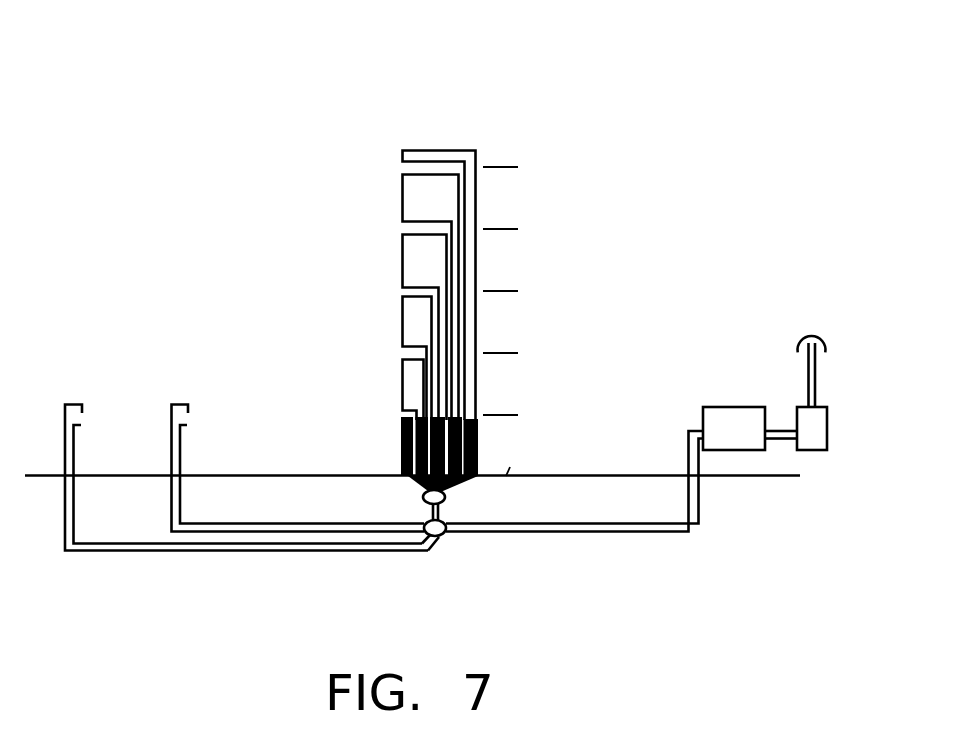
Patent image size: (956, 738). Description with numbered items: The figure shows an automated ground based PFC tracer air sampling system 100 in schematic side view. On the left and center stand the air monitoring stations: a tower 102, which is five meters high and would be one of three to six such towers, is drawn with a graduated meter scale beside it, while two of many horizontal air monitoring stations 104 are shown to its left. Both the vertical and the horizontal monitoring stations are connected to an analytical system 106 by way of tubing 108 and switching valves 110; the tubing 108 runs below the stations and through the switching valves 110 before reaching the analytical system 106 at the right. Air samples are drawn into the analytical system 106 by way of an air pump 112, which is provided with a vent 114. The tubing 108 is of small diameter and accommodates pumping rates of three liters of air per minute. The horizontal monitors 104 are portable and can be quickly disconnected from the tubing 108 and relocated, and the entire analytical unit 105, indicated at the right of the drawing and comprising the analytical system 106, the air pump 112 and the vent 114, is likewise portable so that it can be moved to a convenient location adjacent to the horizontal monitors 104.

The automated ground based PFC tracer air sampling system 100 is at (266, 128).
The tower 102 is at (433, 148).
The horizontal air monitoring stations 104 is at (83, 455).
The analytical unit 105 is at (687, 345).
The analytical system 106 is at (718, 406).
The tubing 108 is at (548, 533).
The switching valves 110 is at (446, 522).
The air pump 112 is at (812, 451).
The vent 114 is at (815, 356).